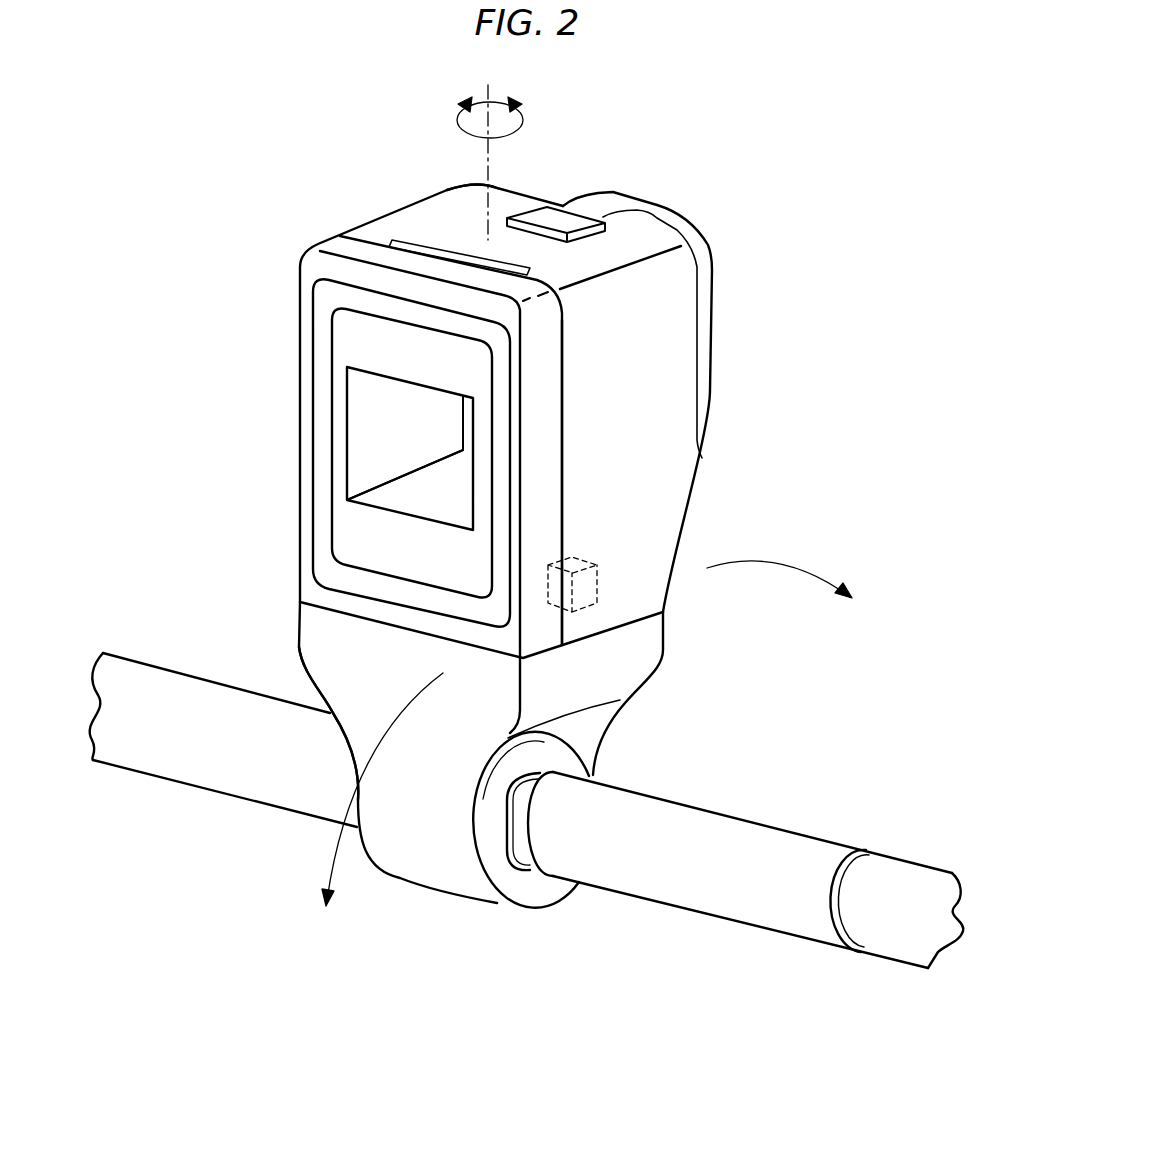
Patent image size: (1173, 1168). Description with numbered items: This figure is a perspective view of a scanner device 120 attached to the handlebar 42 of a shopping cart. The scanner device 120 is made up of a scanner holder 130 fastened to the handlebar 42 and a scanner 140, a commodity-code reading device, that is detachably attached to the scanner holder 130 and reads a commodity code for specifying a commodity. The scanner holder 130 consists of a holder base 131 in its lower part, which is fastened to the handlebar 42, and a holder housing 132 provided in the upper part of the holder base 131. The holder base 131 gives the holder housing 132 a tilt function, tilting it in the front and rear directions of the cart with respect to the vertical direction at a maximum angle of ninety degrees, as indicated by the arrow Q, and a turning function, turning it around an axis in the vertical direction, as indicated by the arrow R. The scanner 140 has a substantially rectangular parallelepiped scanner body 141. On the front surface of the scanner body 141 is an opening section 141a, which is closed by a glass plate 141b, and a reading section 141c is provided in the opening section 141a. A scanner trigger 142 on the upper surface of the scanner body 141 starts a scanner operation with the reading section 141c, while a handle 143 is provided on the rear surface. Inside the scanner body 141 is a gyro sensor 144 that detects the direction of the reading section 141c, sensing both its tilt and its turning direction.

The scanner device 120 is at (413, 207).
The scanner holder 130 is at (663, 660).
The holder base 131 is at (525, 890).
The holder housing 132 is at (353, 687).
The scanner 140 is at (297, 430).
The scanner body 141 is at (667, 412).
The opening section 141a is at (355, 404).
The glass plate 141b is at (328, 313).
The reading section 141c is at (437, 490).
The scanner trigger 142 is at (547, 218).
The handle 143 is at (703, 290).
The gyro sensor 144 is at (587, 585).
The handlebar 42 is at (907, 880).
The arrow R is at (462, 115).
The arrow Q is at (328, 843).